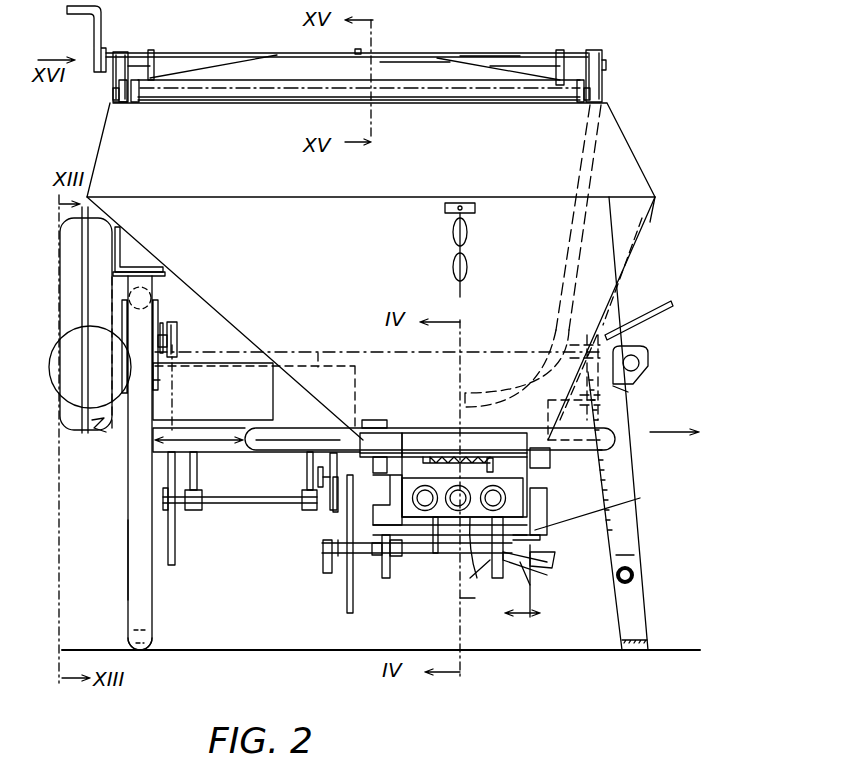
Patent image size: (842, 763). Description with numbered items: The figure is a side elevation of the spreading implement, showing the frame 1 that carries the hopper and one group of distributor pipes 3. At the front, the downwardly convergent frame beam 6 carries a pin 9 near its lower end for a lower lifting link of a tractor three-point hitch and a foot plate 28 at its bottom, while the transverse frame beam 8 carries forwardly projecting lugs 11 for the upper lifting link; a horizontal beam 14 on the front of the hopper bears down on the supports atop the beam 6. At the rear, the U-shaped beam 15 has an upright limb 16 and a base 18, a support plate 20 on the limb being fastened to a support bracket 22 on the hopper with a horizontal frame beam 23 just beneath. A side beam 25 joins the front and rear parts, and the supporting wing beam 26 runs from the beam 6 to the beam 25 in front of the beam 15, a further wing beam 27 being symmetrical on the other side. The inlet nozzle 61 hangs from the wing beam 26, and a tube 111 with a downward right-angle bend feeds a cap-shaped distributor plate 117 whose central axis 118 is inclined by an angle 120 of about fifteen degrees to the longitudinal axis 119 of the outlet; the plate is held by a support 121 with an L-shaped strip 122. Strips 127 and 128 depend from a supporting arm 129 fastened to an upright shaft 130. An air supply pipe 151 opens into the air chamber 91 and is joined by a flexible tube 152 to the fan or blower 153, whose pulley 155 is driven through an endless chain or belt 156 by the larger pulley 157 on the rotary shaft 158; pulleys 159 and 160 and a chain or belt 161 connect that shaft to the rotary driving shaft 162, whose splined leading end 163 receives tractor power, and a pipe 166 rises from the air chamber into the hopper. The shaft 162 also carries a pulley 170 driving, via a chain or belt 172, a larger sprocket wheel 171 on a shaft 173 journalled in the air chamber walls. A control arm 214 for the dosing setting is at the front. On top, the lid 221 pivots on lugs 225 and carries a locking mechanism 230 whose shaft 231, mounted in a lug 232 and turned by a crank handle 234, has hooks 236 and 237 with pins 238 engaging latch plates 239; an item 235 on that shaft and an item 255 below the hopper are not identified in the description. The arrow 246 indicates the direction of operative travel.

The frame 1 is at (640, 492).
The group of distributor pipes 3 is at (418, 420).
The frame beam 6 is at (634, 630).
The transverse frame beam 8 is at (630, 392).
The pin 9 is at (634, 573).
The lugs 11 is at (648, 356).
The horizontal beam 14 is at (596, 284).
The U-shaped beam 15 is at (121, 516).
The upright limb 16 is at (127, 556).
The base 18 is at (130, 638).
The support plate 20 is at (152, 270).
The support bracket 22 is at (128, 232).
The horizontal frame beam 23 is at (162, 287).
The side beam 25 is at (213, 428).
The supporting wing beam 26 is at (310, 411).
The further supporting wing beam 27 is at (189, 428).
The foot plate 28 is at (632, 652).
The inlet nozzle 61 is at (475, 568).
The air chamber 91 is at (492, 350).
The tube 111 is at (628, 505).
The distributor plate 117 is at (548, 568).
The central axis 118 is at (532, 590).
The longitudinal axis 119 is at (528, 594).
The angle 120 is at (523, 617).
The support 121 is at (446, 621).
The L-shaped strip 122 is at (468, 586).
The strip 127 is at (505, 447).
The strip 128 is at (410, 455).
The supporting arm 129 is at (522, 419).
The upright shaft 130 is at (374, 420).
The air supply pipe 151 is at (322, 352).
The flexible tube 152 is at (238, 352).
The fan or blower 153 is at (90, 335).
The sprocket wheel or pulley 155 is at (175, 322).
The box wall 156 is at (163, 387).
The larger sprocket wheel or pulley 157 is at (176, 547).
The rotary shaft 158 is at (232, 487).
The sprocket wheel or pulley 159 is at (345, 508).
The sprocket wheel or pulley 160 is at (346, 600).
The transmission chain or belt 161 is at (340, 575).
The rotary driving shaft 162 is at (424, 556).
The leading end 163 is at (556, 556).
The pipe 166 is at (560, 228).
The sprocket wheel or pulley 170 is at (322, 562).
The larger sprocket wheel 171 is at (328, 466).
The endless transmission chain or belt 172 is at (332, 537).
The shaft 173 is at (378, 474).
The control arm 214 is at (671, 301).
The lid 221 is at (402, 58).
The lugs 225 is at (135, 102).
The locking mechanism 230 is at (238, 33).
The shaft 231 is at (481, 50).
The lug 232 is at (560, 50).
The crank handle 234 is at (66, 10).
The pin 235 is at (152, 50).
The hook 236 is at (594, 50).
The hook 237 is at (122, 52).
The pins 238 is at (112, 95).
The latch plates 239 is at (119, 84).
The arrow 246 is at (660, 432).
The chain 255 is at (452, 240).